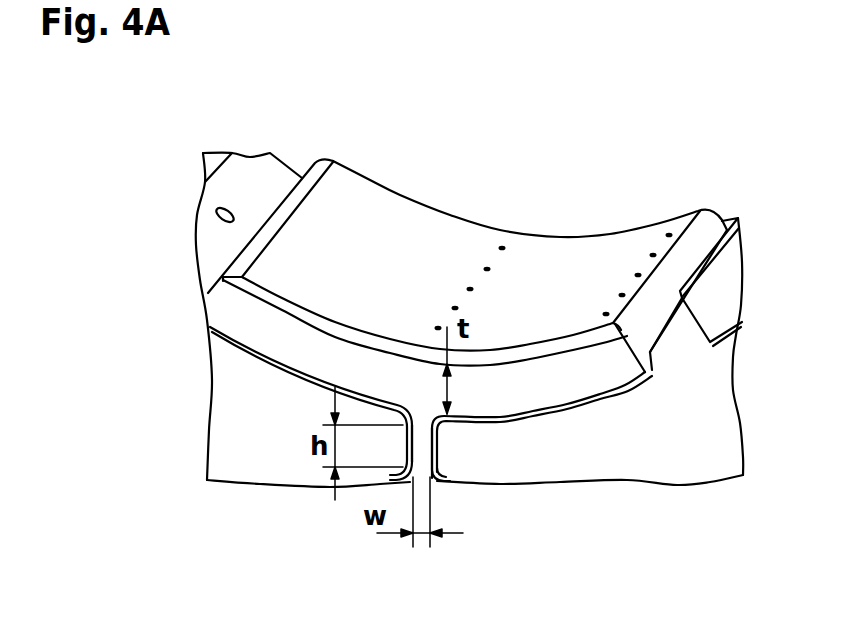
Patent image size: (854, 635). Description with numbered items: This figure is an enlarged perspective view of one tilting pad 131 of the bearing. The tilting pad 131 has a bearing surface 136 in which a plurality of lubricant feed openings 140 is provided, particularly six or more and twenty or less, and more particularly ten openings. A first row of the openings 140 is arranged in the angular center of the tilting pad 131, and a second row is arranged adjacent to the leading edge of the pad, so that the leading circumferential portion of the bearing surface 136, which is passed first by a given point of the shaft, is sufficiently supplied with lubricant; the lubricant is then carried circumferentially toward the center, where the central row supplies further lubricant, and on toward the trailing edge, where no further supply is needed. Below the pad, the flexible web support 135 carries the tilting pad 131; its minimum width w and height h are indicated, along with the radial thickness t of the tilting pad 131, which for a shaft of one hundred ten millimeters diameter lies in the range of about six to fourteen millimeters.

The tilting pad 131 is at (275, 369).
The flexible web support 135 is at (418, 447).
The bearing surface 136 is at (420, 257).
The lubricant feed openings 140 is at (488, 268).